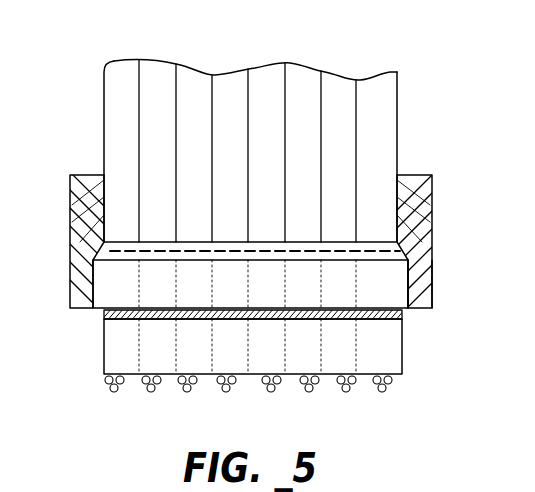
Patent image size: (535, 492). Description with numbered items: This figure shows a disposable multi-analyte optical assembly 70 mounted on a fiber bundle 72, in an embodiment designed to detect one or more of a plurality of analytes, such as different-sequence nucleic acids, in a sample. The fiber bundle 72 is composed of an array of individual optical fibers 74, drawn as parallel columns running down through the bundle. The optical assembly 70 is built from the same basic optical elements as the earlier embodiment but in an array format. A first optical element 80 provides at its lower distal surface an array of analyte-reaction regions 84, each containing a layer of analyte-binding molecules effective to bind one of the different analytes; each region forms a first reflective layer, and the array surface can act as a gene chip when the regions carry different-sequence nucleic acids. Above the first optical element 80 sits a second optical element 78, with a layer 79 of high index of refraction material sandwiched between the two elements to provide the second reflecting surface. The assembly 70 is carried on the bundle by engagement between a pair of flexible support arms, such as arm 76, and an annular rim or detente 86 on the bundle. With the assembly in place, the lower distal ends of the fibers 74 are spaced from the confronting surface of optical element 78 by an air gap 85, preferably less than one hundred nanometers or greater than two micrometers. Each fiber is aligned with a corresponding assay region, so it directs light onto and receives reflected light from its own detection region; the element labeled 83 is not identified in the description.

The optical assembly 70 is at (437, 204).
The fiber bundle 72 is at (416, 121).
The optical fibers 74 is at (228, 77).
The flexible support arm 76 is at (433, 270).
The second optical element 78 is at (100, 285).
The layer of high index of refraction material 79 is at (101, 315).
The first optical element 80 is at (386, 352).
The nozzle 83 is at (259, 400).
The analyte-reaction regions 84 is at (188, 393).
The air gap 85 is at (106, 262).
The annular rim or detente 86 is at (410, 176).